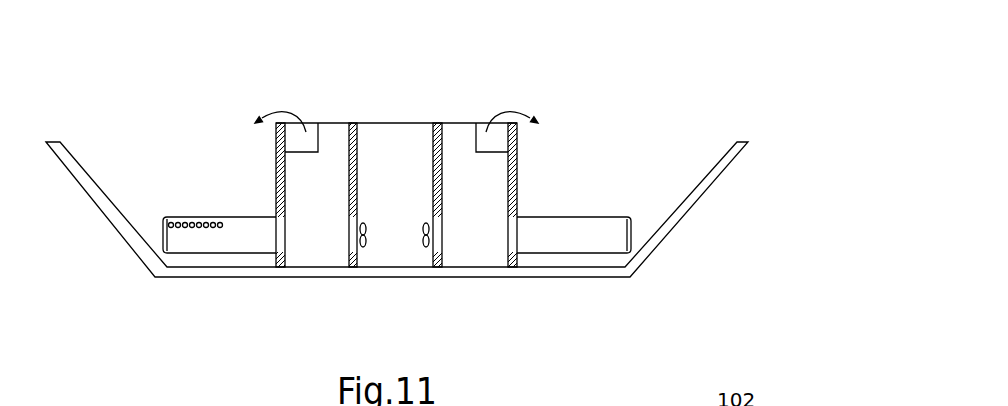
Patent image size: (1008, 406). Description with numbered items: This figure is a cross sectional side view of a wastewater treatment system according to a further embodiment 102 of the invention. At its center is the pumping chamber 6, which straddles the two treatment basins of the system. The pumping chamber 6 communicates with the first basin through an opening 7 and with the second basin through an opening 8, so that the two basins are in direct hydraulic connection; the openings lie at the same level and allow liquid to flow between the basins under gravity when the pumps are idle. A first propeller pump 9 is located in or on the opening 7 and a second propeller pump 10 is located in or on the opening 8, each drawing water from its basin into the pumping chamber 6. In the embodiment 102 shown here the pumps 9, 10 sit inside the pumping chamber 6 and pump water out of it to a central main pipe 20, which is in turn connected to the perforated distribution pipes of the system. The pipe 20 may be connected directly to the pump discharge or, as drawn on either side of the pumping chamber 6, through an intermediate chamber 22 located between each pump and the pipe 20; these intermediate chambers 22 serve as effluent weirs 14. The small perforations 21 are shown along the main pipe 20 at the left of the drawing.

The embodiment 102 is at (670, 92).
The pumping chamber 6 is at (399, 172).
The opening 7 is at (439, 236).
The opening 8 is at (353, 240).
The first propeller pump 9 is at (428, 252).
The second propeller pump 10 is at (362, 247).
The effluent weir 14 is at (280, 108).
The central main pipe 20 is at (248, 234).
The perforations 21 is at (166, 227).
The intermediate chamber 22 is at (517, 107).